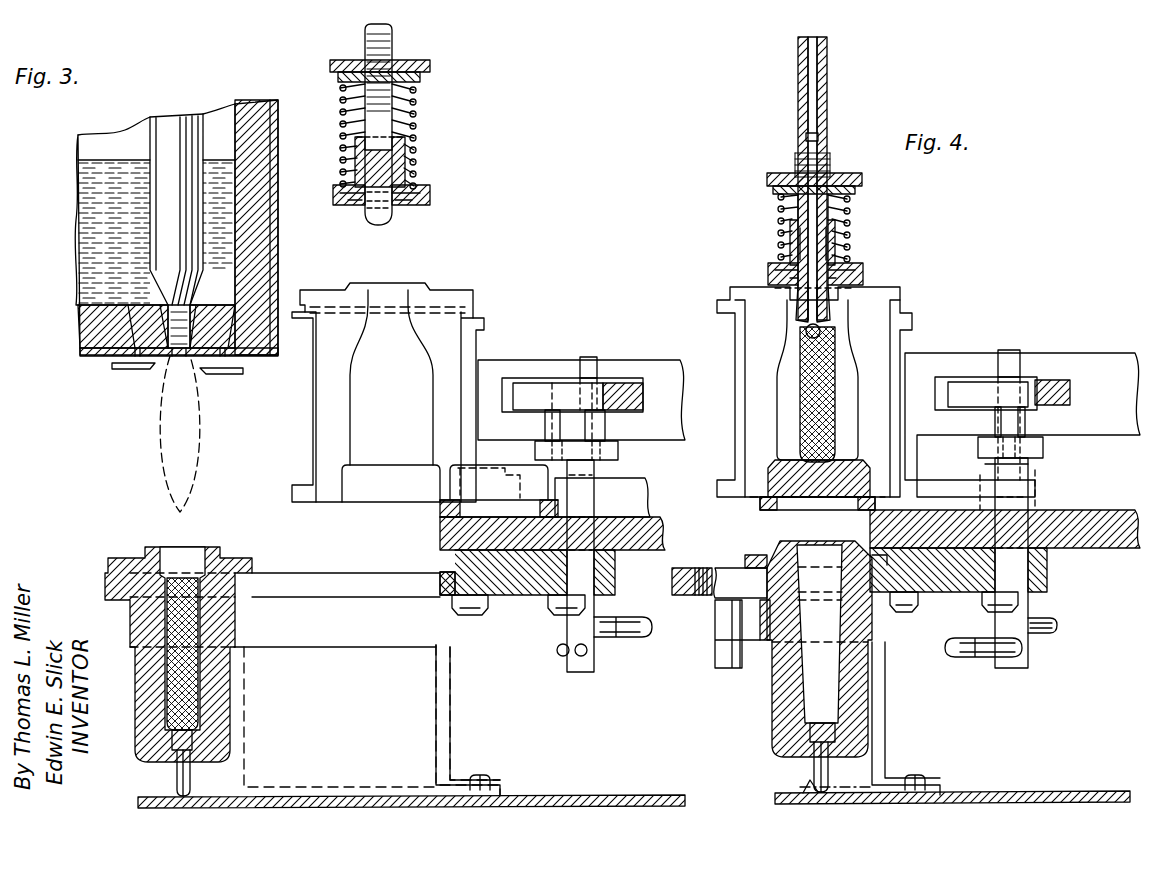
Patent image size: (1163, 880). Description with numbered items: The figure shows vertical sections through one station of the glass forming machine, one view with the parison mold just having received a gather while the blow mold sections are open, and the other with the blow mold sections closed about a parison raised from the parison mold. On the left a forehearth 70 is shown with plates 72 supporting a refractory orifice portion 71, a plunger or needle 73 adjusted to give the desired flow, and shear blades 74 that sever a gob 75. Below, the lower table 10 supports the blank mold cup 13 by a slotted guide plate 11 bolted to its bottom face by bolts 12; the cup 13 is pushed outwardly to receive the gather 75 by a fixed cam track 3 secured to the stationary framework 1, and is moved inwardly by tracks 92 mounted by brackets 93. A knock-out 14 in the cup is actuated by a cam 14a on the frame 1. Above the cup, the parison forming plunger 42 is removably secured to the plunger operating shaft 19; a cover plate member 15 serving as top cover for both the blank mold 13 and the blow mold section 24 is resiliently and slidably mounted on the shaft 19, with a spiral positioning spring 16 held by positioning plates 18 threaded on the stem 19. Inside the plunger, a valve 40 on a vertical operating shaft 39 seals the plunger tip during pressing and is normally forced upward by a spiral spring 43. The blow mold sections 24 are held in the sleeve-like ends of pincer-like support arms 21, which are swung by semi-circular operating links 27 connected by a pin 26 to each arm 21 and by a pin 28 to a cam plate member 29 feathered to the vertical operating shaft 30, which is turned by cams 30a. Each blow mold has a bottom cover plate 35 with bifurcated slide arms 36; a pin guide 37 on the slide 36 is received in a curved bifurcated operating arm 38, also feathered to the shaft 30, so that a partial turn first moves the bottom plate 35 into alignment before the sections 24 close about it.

In FIG. 3, the stationary framework 1 is at (372, 797).
In FIG. 4, the stationary framework 1 is at (1010, 796).
In FIG. 3, the fixed cam track 3 is at (450, 700).
In FIG. 4, the fixed cam track 3 is at (884, 700).
In FIG. 3, the lower table 10 is at (442, 538).
In FIG. 4, the lower table 10 is at (1118, 550).
In FIG. 3, the slotted guide plate 11 is at (520, 592).
In FIG. 4, the slotted guide plate 11 is at (740, 572).
In FIG. 4, the bolts 12 is at (918, 606).
In FIG. 3, the blank mold cup 13 is at (133, 672).
In FIG. 4, the blank mold cup 13 is at (772, 702).
In FIG. 3, the knock-out 14 is at (178, 778).
In FIG. 4, the knock-out 14 is at (830, 768).
In FIG. 4, the cam 14a is at (806, 790).
In FIG. 3, the cover plate member 15 is at (431, 192).
In FIG. 4, the cover plate member 15 is at (770, 274).
In FIG. 3, the spiral positioning spring 16 is at (415, 125).
In FIG. 4, the spiral positioning spring 16 is at (850, 233).
In FIG. 3, the positioning plates 18 is at (426, 66).
In FIG. 4, the positioning plates 18 is at (863, 182).
In FIG. 3, the plunger operating shaft 19 is at (375, 35).
In FIG. 4, the plunger operating shaft 19 is at (828, 68).
In FIG. 3, the blow mold section support arm 21 is at (622, 364).
In FIG. 4, the blow mold section support arm 21 is at (1068, 362).
In FIG. 3, the blow mold section 24 is at (447, 343).
In FIG. 4, the blow mold section 24 is at (752, 343).
In FIG. 4, the pin 26 is at (1007, 352).
In FIG. 3, the semi-circular operating link 27 is at (536, 385).
In FIG. 4, the semi-circular operating link 27 is at (955, 385).
In FIG. 3, the pin 28 is at (600, 420).
In FIG. 4, the pin 28 is at (1012, 419).
In FIG. 3, the cam plate member 29 is at (615, 450).
In FIG. 4, the cam plate member 29 is at (1030, 446).
In FIG. 3, the vertical operating shaft 30 is at (582, 568).
In FIG. 4, the vertical operating shaft 30 is at (1012, 566).
In FIG. 3, the cams 30a is at (557, 650).
In FIG. 4, the cams 30a is at (1042, 636).
In FIG. 3, the bottom cover plate 35 is at (497, 470).
In FIG. 4, the bottom cover plate 35 is at (826, 488).
In FIG. 3, the bifurcated slide arms 36 is at (640, 506).
In FIG. 4, the bifurcated slide arms 36 is at (762, 508).
In FIG. 4, the pin guide 37 is at (990, 468).
In FIG. 4, the curved bifurcated operating arm 38 is at (945, 474).
In FIG. 4, the vertical operating shaft 39 is at (802, 212).
In FIG. 3, the valve 40 is at (385, 222).
In FIG. 4, the valve 40 is at (822, 332).
In FIG. 3, the parison forming plunger 42 is at (385, 156).
In FIG. 4, the spiral spring 43 is at (806, 140).
In FIG. 3, the forehearth 70 is at (82, 322).
In FIG. 3, the refractory orifice portion 71 is at (130, 330).
In FIG. 3, the plates 72 is at (92, 358).
In FIG. 3, the plunger or needle 73 is at (172, 124).
In FIG. 3, the shear blades 74 is at (226, 376).
In FIG. 4, the gather of glass 75 is at (812, 430).
In FIG. 4, the tracks 92 is at (760, 620).
In FIG. 4, the brackets 93 is at (726, 668).